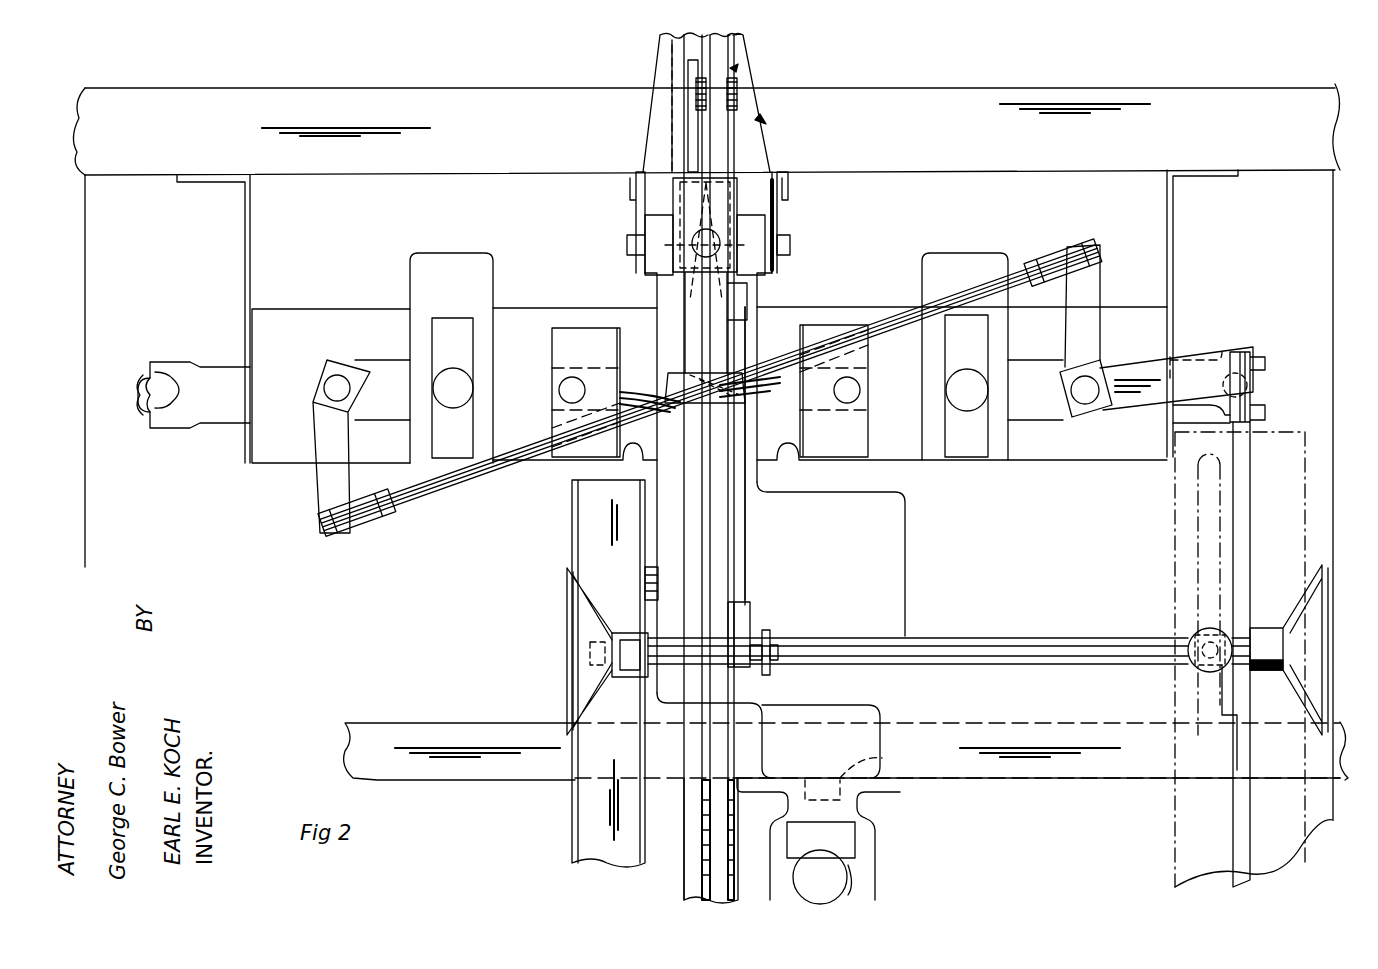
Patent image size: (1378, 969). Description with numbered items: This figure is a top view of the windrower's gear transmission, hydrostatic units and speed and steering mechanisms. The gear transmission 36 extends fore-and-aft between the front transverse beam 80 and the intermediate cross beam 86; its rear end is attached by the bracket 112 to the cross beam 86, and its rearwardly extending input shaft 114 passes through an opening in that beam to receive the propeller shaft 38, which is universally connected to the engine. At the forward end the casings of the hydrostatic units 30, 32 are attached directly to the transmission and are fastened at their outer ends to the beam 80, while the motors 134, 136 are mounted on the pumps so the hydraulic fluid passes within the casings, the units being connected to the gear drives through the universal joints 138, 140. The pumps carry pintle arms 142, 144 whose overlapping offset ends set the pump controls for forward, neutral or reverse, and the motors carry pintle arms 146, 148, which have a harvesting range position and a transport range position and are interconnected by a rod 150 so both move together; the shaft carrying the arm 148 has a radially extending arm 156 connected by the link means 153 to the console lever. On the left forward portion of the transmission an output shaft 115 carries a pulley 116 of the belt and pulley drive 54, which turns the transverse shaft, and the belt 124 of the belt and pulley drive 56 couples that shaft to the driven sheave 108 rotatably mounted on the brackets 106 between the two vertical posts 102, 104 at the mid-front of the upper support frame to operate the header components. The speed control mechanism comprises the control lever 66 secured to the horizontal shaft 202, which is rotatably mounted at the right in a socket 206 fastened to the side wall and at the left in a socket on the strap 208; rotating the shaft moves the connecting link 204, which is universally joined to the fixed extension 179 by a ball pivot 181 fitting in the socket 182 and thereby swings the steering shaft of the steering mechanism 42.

The front transverse beam 80 is at (388, 97).
The brackets 106 is at (656, 66).
The belt and pulley drive 54 is at (737, 70).
The driven sheave 108 is at (733, 88).
The belt 124 is at (690, 120).
The steering mechanism 42 is at (762, 124).
The vertical post 102 is at (631, 174).
The vertical post 104 is at (792, 176).
The motor 134 is at (320, 308).
The universal joint 138 is at (197, 365).
The hydrostatic unit 30 is at (577, 308).
The hydrostatic unit 32 is at (874, 308).
The pintle arm 142 is at (572, 388).
The pintle arm 144 is at (850, 394).
The pintle arm 146 is at (338, 388).
The pintle arm 148 is at (1103, 380).
The motor 136 is at (1100, 300).
The rod 150 is at (453, 490).
The radially extending arm 156 is at (1190, 350).
The universal joint 140 is at (1258, 355).
The link means 153 is at (1198, 453).
The pulley 116 is at (570, 497).
The output shaft 115 is at (646, 555).
The connecting link 204 is at (746, 545).
The ball pivot 181 is at (752, 606).
The fixed extension 179 is at (771, 632).
The socket 182 is at (778, 660).
The strap 208 is at (578, 625).
The horizontal shaft 202 is at (1058, 638).
The control lever 66 is at (1220, 632).
The socket 206 is at (1302, 682).
The gear transmission 36 is at (882, 710).
The cross beam 86 is at (1088, 725).
The bracket 112 is at (877, 780).
The input shaft 114 is at (862, 777).
The propeller shaft 38 is at (842, 882).
The belt and pulley drive 56 is at (688, 835).